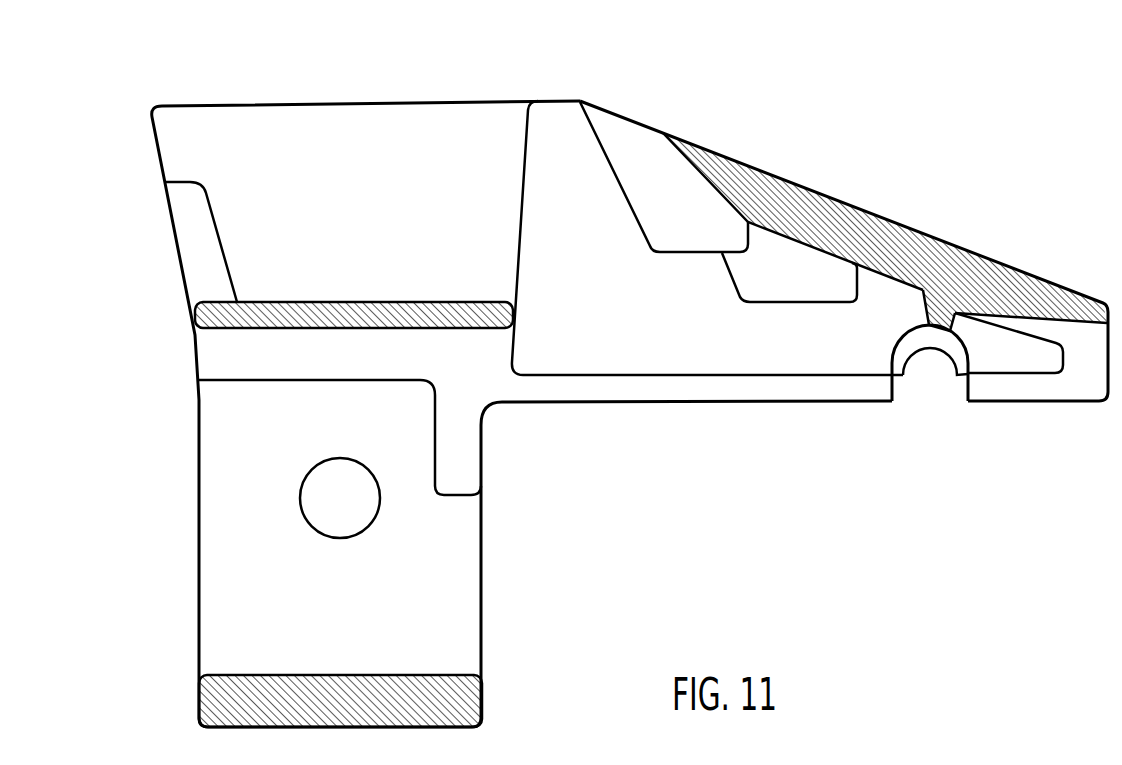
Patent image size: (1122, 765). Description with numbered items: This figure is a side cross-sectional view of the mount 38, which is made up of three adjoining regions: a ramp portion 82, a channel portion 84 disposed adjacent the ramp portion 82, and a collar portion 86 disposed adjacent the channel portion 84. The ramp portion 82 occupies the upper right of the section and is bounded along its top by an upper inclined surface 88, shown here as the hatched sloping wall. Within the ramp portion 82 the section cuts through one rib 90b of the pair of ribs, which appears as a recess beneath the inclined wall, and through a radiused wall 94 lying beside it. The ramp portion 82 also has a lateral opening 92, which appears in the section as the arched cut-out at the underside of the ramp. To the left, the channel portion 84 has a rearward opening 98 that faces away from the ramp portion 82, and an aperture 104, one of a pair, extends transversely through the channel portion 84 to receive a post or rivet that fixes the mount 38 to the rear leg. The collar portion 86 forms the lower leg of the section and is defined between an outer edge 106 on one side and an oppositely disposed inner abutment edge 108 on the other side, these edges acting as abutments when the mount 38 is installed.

The mount 38 is at (455, 73).
The ramp portion 82 is at (780, 139).
The channel portion 84 is at (196, 79).
The collar portion 86 is at (164, 560).
The upper inclined surface 88 is at (963, 245).
The rib 90b is at (808, 295).
The lateral opening 92 is at (937, 350).
The radiused wall 94 is at (682, 210).
The rearward opening 98 is at (195, 247).
The aperture 104 is at (370, 523).
The outer edge 106 is at (198, 443).
The inner abutment edge 108 is at (482, 540).